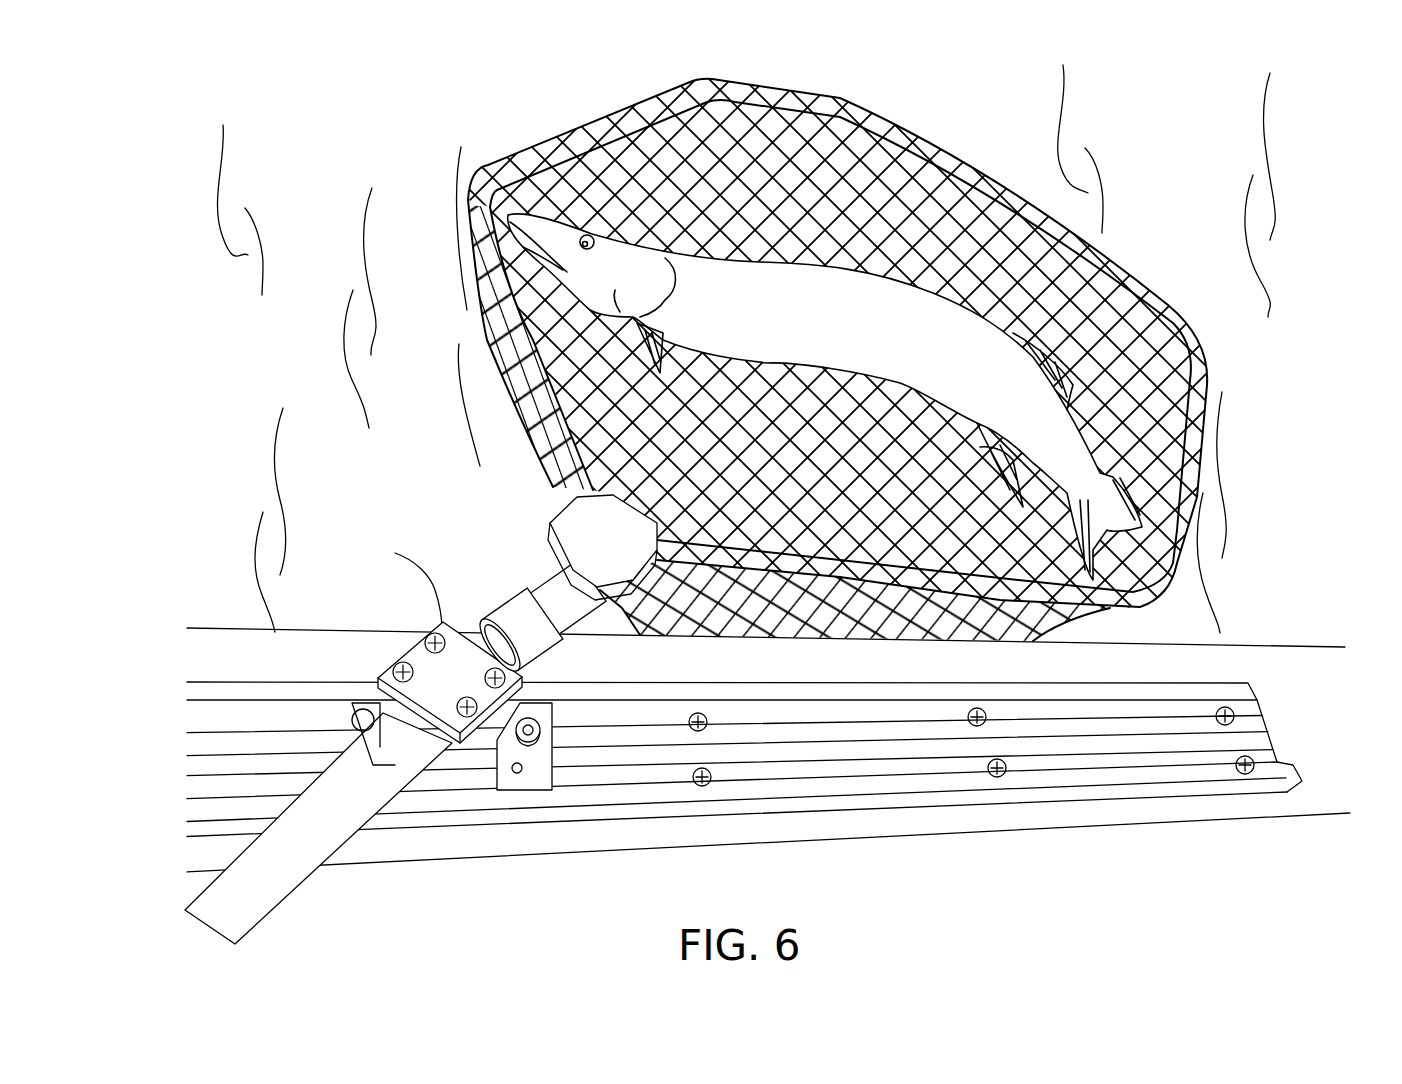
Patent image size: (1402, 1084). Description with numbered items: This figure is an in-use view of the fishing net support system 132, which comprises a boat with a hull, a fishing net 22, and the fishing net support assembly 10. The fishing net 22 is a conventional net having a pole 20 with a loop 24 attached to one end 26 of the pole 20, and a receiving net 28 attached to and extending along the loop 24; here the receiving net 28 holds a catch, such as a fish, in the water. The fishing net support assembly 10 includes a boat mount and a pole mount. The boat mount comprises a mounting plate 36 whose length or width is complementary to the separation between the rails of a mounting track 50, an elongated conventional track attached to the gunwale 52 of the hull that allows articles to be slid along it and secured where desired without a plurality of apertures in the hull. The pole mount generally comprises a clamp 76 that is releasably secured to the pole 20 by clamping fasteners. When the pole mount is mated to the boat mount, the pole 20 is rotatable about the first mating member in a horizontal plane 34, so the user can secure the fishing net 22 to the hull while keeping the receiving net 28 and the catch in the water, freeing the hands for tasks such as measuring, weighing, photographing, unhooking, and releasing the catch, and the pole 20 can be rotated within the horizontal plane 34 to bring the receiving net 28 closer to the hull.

The fishing net support assembly 10 is at (352, 572).
The pole 20 is at (540, 593).
The fishing net 22 is at (823, 339).
The loop 24 is at (918, 150).
The one end 26 is at (550, 523).
The receiving net 28 is at (825, 150).
The horizontal plane 34 is at (1183, 317).
The mounting plate 36 is at (543, 769).
The mounting track 50 is at (1108, 735).
The gunwale 52 is at (1305, 730).
The clamp 76 is at (472, 760).
The fishing net support system 132 is at (286, 196).